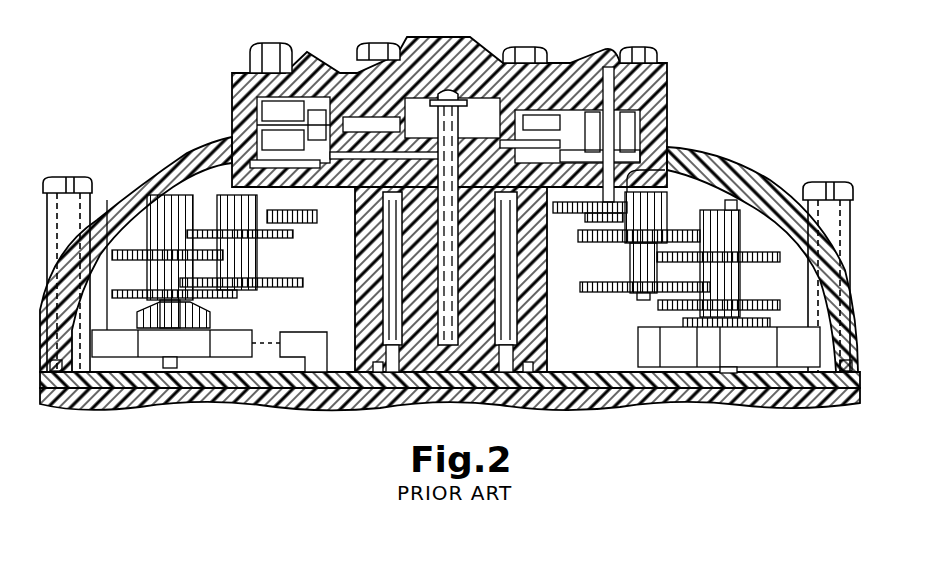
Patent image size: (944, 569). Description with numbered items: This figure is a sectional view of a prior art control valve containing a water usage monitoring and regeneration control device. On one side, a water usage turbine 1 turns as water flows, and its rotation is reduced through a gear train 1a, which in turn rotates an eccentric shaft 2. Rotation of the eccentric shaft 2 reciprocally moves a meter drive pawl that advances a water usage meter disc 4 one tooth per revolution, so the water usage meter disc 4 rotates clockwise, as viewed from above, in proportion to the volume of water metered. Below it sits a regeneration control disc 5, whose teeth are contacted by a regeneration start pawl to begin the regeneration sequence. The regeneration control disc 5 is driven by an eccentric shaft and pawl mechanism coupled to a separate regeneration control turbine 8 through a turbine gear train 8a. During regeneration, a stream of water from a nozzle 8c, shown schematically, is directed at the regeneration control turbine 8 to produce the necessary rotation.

The water usage turbine 1 is at (790, 360).
The gear train 1a is at (757, 240).
The eccentric shaft 2 is at (627, 90).
The water usage meter disc 4 is at (547, 112).
The regeneration control disc 5 is at (547, 143).
The regeneration control turbine 8 is at (223, 347).
The turbine gear train 8a is at (204, 196).
The nozzle 8c is at (293, 347).